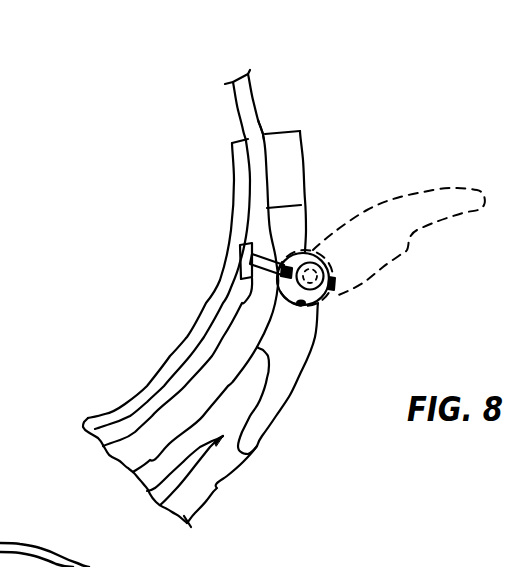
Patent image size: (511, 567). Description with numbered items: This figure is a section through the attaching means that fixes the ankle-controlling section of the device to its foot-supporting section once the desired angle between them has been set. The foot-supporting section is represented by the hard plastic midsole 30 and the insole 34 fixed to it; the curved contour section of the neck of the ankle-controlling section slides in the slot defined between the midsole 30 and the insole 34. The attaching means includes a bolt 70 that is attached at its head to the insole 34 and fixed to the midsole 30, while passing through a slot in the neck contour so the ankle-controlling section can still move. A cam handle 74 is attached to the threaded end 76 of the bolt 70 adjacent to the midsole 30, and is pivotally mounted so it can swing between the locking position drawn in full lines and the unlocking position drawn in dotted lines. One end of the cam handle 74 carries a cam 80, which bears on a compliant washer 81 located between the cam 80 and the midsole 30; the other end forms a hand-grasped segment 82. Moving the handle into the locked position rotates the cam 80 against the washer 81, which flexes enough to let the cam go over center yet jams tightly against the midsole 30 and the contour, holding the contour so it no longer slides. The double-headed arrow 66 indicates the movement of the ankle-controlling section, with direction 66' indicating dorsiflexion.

The midsole 30 is at (130, 453).
The insole 34 is at (158, 380).
The double-headed arrow 66 is at (288, 107).
The dorsiflexion direction 66' is at (273, 72).
The bolt 70 is at (300, 251).
The cam handle 74 is at (301, 378).
The threaded end 76 is at (327, 259).
The cam 80 is at (338, 292).
The compliant washer 81 is at (293, 310).
The hand-grasped segment 82 is at (433, 205).